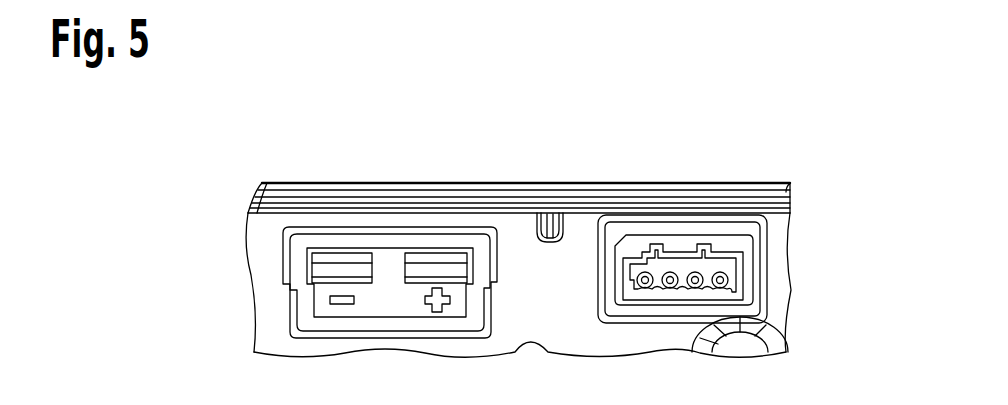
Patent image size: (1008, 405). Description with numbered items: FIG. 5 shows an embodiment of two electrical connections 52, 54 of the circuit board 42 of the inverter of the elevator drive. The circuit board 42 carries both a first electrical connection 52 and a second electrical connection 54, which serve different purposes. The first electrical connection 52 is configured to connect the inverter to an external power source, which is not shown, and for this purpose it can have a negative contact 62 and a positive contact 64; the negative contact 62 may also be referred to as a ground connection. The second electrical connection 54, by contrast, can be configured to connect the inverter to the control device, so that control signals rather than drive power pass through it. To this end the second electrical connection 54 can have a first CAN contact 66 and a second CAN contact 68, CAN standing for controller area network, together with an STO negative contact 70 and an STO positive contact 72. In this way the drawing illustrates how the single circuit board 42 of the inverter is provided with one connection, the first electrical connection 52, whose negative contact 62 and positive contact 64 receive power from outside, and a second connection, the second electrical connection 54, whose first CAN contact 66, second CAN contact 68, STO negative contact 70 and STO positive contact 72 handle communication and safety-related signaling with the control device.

The circuit board 42 is at (775, 234).
The first electrical connection 52 is at (276, 285).
The second electrical connection 54 is at (777, 285).
The negative contact 62 is at (340, 270).
The positive contact 64 is at (430, 270).
The first CAN contact 66 is at (645, 275).
The second CAN contact 68 is at (670, 275).
The STO negative contact 70 is at (695, 275).
The STO positive contact 72 is at (720, 275).